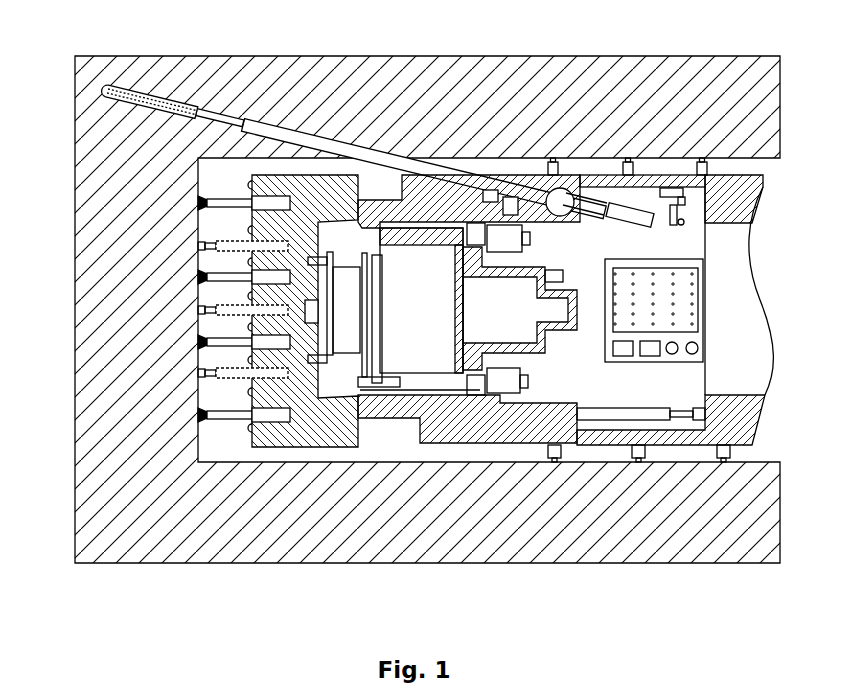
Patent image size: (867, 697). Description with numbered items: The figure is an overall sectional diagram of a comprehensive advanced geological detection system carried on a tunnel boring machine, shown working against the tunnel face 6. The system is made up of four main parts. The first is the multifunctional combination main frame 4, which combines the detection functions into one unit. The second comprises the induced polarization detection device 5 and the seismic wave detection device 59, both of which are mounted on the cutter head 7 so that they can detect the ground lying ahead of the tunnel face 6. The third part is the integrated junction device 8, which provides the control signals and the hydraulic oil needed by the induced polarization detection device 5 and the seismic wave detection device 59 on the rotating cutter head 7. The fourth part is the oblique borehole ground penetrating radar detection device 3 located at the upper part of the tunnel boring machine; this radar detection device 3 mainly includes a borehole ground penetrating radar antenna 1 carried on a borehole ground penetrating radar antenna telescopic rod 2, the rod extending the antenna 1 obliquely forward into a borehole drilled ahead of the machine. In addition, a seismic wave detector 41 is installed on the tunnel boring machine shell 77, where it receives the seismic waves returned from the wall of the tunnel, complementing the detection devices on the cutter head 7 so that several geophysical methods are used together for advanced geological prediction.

The borehole ground penetrating radar antenna 1 is at (189, 104).
The borehole ground penetrating radar antenna telescopic rod 2 is at (300, 131).
The borehole ground penetrating radar detection device 3 is at (623, 215).
The seismic wave detector 41 is at (553, 160).
The multifunctional combination main frame 4 is at (683, 297).
The induced polarization detection device 5 is at (230, 342).
The seismic wave detection device 59 is at (230, 247).
The tunnel face 6 is at (196, 179).
The cutter head 7 is at (250, 433).
The integrated junction device 8 is at (351, 312).
The tunnel boring machine shell 77 is at (590, 437).